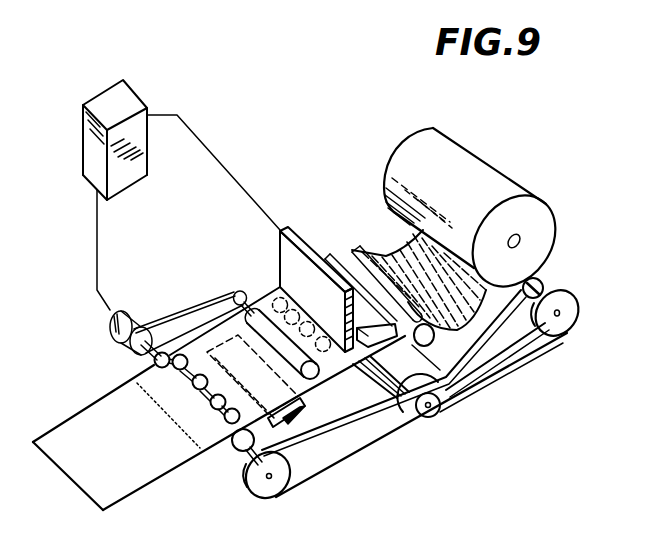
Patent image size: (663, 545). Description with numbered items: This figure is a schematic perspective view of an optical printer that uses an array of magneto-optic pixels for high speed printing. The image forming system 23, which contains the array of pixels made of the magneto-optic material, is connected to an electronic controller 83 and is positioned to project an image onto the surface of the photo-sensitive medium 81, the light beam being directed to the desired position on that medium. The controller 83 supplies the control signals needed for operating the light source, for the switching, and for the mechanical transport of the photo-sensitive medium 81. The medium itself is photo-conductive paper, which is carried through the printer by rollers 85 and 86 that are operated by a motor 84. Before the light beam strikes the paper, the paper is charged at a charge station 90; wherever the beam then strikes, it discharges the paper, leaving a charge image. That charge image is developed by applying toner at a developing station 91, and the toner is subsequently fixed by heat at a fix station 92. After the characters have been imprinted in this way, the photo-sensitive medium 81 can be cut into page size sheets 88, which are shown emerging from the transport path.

The image forming system 23 is at (295, 228).
The photo-sensitive medium 81 is at (328, 368).
The controller 83 is at (125, 100).
The motor 84 is at (445, 387).
The roller 85 is at (428, 341).
The roller 86 is at (236, 450).
The page size sheets 88 is at (140, 467).
The charge station 90 is at (380, 337).
The developing station 91 is at (313, 377).
The fix station 92 is at (294, 416).